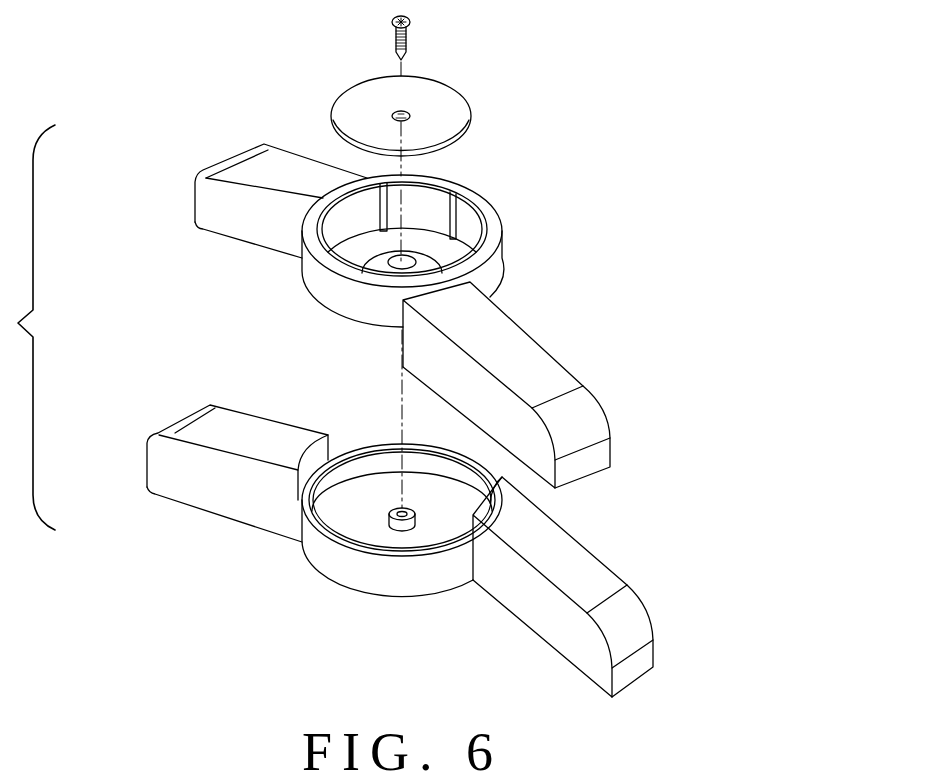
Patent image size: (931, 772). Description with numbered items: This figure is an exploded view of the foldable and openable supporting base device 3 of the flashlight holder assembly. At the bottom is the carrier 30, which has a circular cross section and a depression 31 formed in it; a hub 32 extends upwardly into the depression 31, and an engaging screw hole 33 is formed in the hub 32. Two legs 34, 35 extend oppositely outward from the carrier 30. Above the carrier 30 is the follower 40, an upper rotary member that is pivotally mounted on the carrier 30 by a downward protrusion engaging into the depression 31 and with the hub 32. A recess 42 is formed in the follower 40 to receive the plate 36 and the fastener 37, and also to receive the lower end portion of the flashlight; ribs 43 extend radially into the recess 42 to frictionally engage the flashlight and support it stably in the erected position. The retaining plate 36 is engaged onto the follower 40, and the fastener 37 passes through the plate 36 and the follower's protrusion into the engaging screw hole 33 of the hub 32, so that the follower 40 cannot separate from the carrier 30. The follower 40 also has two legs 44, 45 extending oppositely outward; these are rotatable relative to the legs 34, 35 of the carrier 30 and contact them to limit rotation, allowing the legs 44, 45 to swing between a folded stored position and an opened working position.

The supporting base device 3 is at (652, 299).
The carrier 30 is at (400, 580).
The depression 31 is at (437, 490).
The hub 32 is at (390, 525).
The engaging screw hole 33 is at (400, 482).
The leg 34 is at (197, 485).
The leg 35 is at (540, 613).
The plate 36 is at (433, 110).
The fastener 37 is at (408, 43).
The follower 40 is at (495, 270).
The recess 42 is at (358, 247).
The ribs 43 is at (385, 198).
The leg 44 is at (207, 205).
The leg 45 is at (588, 418).